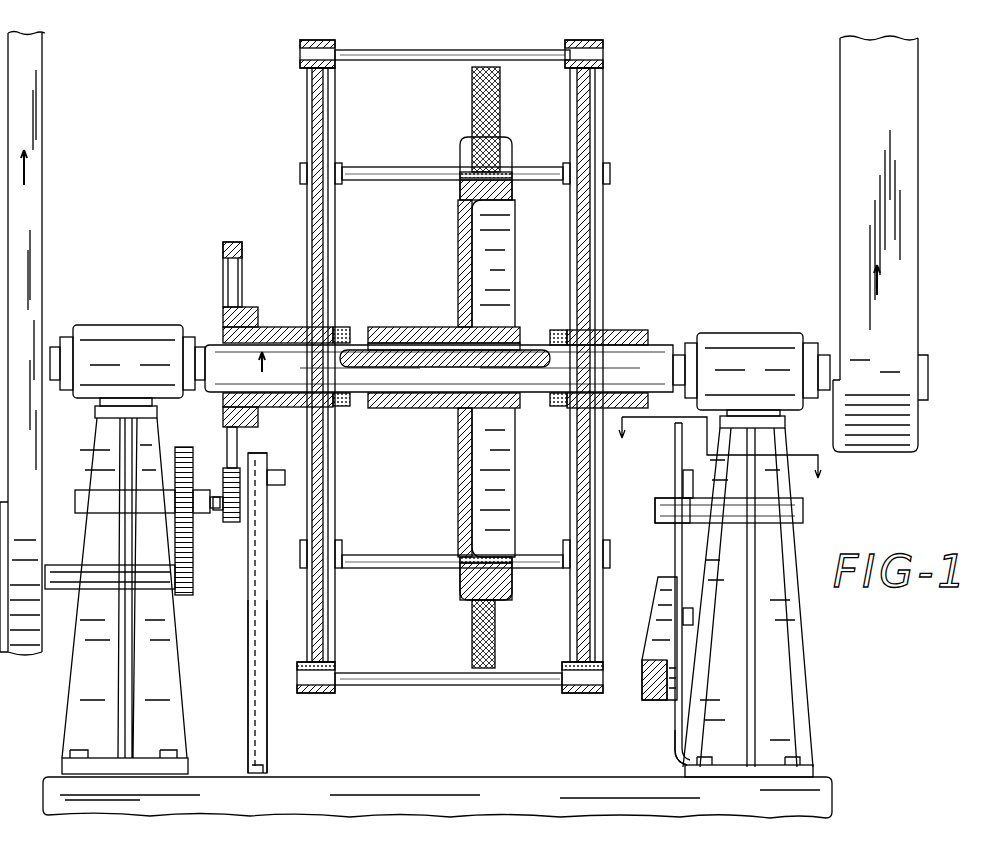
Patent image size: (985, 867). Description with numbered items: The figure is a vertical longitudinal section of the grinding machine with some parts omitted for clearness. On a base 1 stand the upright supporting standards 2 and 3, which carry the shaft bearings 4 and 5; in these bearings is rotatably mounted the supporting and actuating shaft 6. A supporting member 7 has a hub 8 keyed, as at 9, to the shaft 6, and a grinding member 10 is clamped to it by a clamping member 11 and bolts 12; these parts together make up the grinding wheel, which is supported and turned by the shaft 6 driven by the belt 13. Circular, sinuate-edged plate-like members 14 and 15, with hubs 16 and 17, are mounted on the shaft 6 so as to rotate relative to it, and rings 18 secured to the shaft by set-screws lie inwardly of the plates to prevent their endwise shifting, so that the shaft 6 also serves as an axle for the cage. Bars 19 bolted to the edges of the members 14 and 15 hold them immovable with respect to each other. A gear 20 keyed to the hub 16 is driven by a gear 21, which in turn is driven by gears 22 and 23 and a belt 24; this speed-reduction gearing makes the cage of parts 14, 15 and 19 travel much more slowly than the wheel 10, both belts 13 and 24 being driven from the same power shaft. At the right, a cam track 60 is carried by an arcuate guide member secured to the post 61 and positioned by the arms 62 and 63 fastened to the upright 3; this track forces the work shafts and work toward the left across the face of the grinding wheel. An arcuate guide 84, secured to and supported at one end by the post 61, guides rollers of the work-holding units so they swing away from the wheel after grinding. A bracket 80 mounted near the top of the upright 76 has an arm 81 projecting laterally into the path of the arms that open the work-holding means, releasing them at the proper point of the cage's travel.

The base 1 is at (455, 795).
The upright supporting standard 2 is at (165, 697).
The upright supporting standard 3 is at (792, 695).
The shaft bearing 4 is at (120, 326).
The shaft bearing 5 is at (745, 333).
The supporting and actuating shaft 6 is at (439, 368).
The supporting member 7 is at (460, 255).
The hub 8 is at (386, 345).
The key 9 is at (428, 340).
The grinding member 10 is at (500, 105).
The clamping member 11 is at (512, 152).
The bolts 12 is at (515, 172).
The belt 13 is at (848, 112).
The plate-like member 14 is at (320, 265).
The plate-like member 15 is at (592, 255).
The hub 16 is at (279, 327).
The hub 17 is at (622, 330).
The rings 18 is at (345, 327).
The bars 19 is at (398, 165).
The gear 20 is at (230, 246).
The gear 21 is at (232, 525).
The gear 22 is at (183, 447).
The gear 23 is at (185, 597).
The belt 24 is at (35, 292).
The cam track 60 is at (650, 703).
The post 61 is at (675, 752).
The arm 62 is at (678, 520).
The arm 63 is at (690, 608).
The upright 76 is at (262, 724).
The bracket 80 is at (262, 505).
The arm 81 is at (277, 470).
The arcuate guide 84 is at (668, 465).